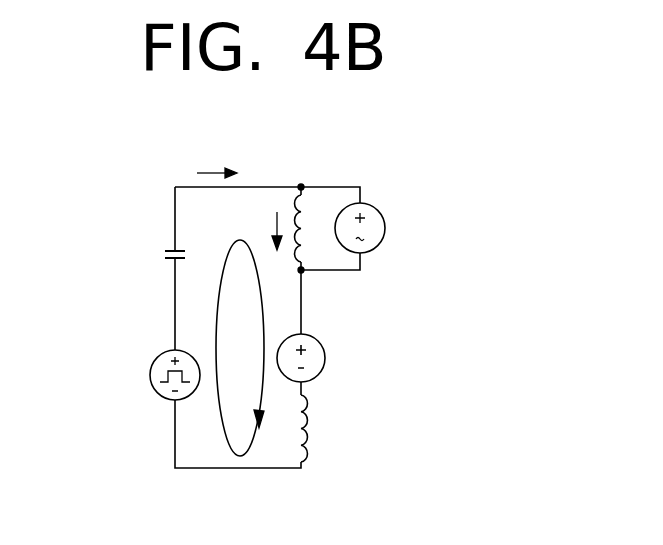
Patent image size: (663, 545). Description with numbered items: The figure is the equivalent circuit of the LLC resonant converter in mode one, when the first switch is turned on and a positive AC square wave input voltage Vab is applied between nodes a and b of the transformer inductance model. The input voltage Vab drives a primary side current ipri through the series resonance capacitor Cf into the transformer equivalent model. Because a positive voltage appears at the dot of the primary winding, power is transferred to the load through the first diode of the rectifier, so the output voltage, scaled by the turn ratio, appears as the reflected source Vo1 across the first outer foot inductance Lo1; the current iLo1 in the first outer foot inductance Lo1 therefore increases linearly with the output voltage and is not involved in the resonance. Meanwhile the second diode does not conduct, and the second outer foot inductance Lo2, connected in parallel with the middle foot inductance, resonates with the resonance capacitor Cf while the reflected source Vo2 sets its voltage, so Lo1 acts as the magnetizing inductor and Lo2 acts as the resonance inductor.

The resonance capacitor Cf is at (163, 258).
The input voltage between nodes a and b Vab is at (154, 375).
The first outer foot inductance Lo1 is at (321, 232).
The second outer foot inductance in parallel with middle foot inductance Lo2 is at (345, 428).
The output voltage reflected through turn ratio onto first outer foot inductance Vo1 is at (426, 232).
The output voltage reflected onto resonant branch Vo2 is at (438, 358).
The primary side current ipri is at (217, 158).
The current flowing in the first outer foot inductance iLo1 is at (259, 231).